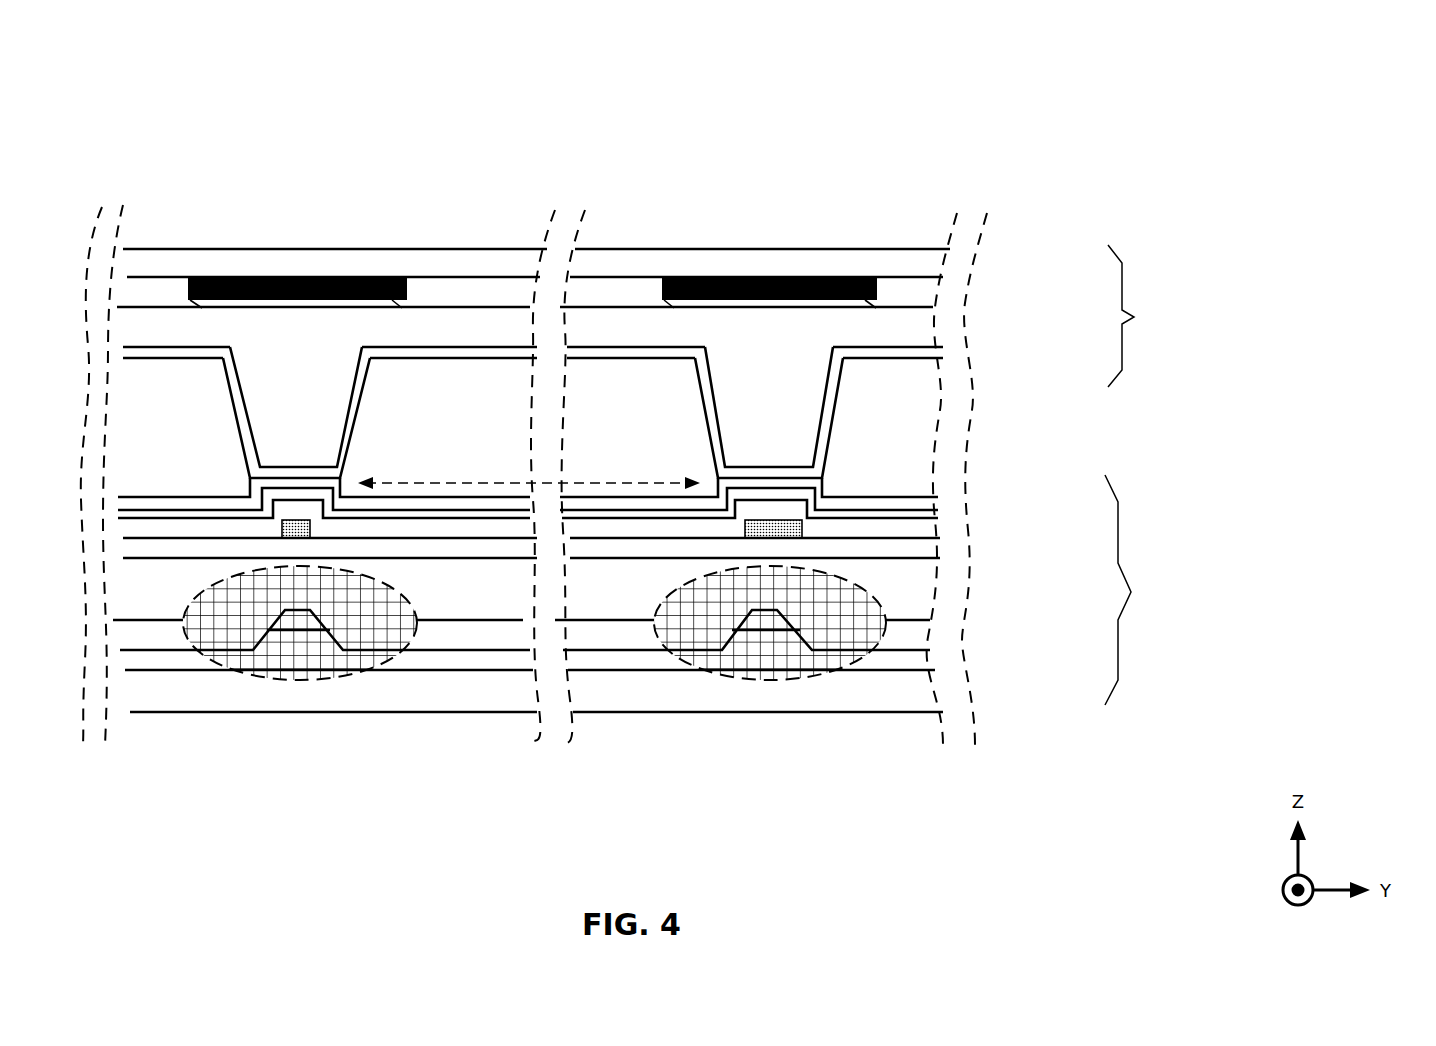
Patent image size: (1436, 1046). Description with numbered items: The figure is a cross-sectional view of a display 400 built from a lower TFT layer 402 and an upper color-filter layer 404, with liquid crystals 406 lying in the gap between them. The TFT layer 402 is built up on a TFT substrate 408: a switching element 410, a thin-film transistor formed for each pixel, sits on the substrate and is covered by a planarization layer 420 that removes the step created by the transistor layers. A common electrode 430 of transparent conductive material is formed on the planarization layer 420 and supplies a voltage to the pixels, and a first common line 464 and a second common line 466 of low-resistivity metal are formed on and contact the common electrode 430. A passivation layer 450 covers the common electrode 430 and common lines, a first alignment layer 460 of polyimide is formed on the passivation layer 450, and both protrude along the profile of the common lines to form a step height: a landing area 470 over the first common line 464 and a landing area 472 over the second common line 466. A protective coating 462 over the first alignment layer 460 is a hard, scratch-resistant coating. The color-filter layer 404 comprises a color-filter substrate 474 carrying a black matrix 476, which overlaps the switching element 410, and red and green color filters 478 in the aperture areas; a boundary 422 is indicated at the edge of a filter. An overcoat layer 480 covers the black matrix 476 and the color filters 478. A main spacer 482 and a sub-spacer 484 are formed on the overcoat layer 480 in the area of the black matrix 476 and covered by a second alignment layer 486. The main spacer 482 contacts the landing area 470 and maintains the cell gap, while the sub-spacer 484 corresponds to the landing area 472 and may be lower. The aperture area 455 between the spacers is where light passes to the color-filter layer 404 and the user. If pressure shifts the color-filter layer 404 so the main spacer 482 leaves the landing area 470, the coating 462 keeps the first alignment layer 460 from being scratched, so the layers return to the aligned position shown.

The display 400 is at (1290, 98).
The TFT layer 402 is at (1145, 590).
The color-filter layer 404 is at (1148, 316).
The liquid crystals 406 is at (490, 413).
The TFT substrate 408 is at (917, 698).
The switching element 410 is at (327, 678).
The planarization layer 420 is at (915, 587).
The color filter boundary 422 is at (592, 278).
The common electrode 430 is at (912, 552).
The passivation layer 450 is at (912, 533).
The aperture area 455 is at (492, 476).
The first alignment layer 460 is at (912, 515).
The protective coating 462 is at (915, 502).
The first common line 464 is at (282, 531).
The second common line 466 is at (782, 527).
The landing area 470 is at (316, 474).
The landing area 472 is at (746, 472).
The color-filter substrate 474 is at (933, 263).
The black matrix 476 is at (301, 277).
The color filters 478 is at (933, 295).
The overcoat layer 480 is at (920, 330).
The main spacer 482 is at (313, 420).
The sub-spacer 484 is at (790, 403).
The second alignment layer 486 is at (922, 357).